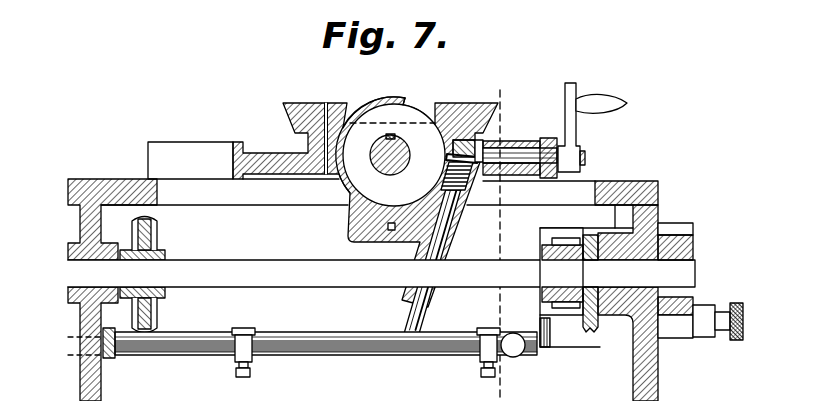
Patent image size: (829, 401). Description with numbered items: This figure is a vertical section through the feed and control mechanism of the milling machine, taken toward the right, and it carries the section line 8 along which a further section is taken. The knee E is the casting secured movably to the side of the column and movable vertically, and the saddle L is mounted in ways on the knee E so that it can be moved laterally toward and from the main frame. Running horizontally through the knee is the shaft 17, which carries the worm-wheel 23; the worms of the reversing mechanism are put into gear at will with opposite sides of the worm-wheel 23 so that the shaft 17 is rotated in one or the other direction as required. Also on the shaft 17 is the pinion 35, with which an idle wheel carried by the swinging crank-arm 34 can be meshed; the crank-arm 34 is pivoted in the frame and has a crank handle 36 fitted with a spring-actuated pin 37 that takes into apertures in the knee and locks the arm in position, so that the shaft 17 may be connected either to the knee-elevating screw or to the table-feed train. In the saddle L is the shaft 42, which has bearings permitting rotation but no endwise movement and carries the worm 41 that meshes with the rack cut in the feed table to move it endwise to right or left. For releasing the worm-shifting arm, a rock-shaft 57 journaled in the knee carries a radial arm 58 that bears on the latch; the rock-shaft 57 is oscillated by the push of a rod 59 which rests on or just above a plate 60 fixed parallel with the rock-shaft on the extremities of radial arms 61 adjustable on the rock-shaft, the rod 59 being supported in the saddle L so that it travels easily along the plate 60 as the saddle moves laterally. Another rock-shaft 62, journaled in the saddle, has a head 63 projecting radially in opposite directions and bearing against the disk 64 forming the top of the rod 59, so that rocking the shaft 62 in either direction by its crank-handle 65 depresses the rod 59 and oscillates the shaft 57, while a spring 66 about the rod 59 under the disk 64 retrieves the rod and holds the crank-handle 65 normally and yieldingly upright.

The saddle L is at (300, 103).
The knee E is at (660, 200).
The section line 8 8 is at (499, 234).
The shaft 17 is at (683, 275).
The worm-wheel 23 is at (156, 235).
The swinging crank-arm 34 is at (595, 333).
The pinion 35 is at (565, 305).
The crank handle 36 is at (686, 330).
The spring-actuated pin 37 is at (744, 312).
The worm 41 is at (413, 116).
The shaft 42 is at (392, 170).
The rock-shaft 57 is at (200, 352).
The radial arm 58 is at (116, 356).
The rod 59 is at (425, 323).
The plate 60 is at (322, 334).
The radial arms 61 is at (255, 360).
The rock-shaft 62 is at (530, 150).
The head 63 is at (455, 140).
The disk 64 is at (446, 157).
The crank-handle 65 is at (577, 128).
The spring 66 is at (447, 174).